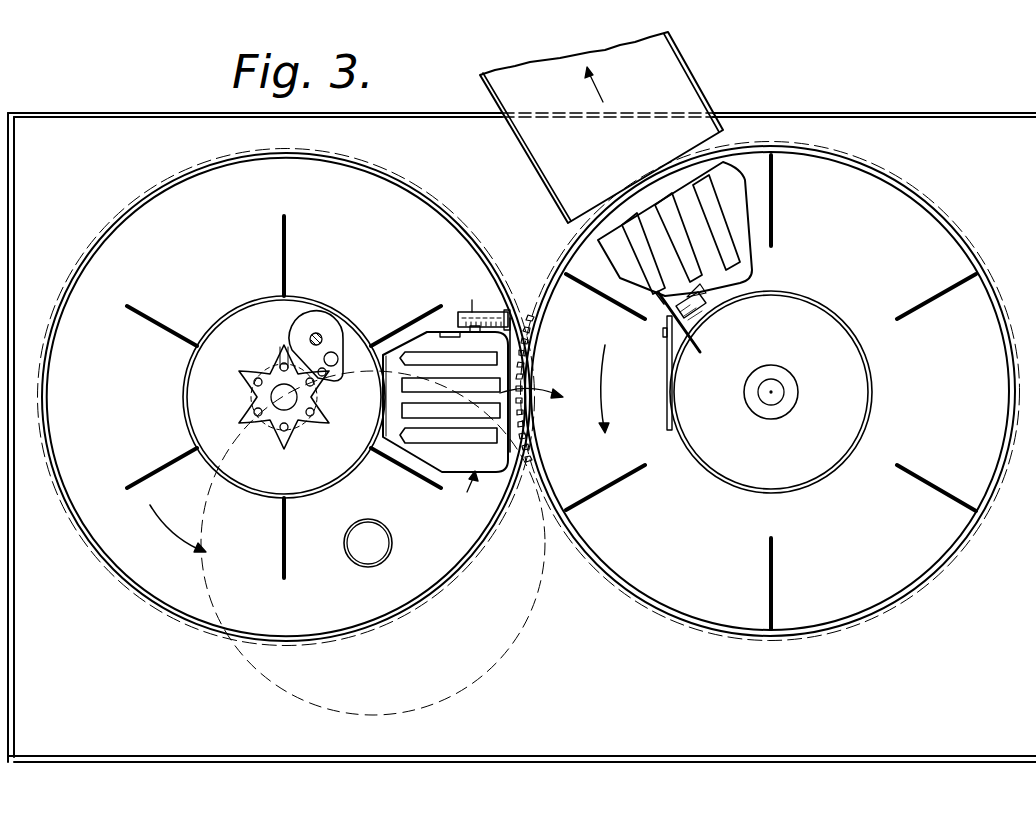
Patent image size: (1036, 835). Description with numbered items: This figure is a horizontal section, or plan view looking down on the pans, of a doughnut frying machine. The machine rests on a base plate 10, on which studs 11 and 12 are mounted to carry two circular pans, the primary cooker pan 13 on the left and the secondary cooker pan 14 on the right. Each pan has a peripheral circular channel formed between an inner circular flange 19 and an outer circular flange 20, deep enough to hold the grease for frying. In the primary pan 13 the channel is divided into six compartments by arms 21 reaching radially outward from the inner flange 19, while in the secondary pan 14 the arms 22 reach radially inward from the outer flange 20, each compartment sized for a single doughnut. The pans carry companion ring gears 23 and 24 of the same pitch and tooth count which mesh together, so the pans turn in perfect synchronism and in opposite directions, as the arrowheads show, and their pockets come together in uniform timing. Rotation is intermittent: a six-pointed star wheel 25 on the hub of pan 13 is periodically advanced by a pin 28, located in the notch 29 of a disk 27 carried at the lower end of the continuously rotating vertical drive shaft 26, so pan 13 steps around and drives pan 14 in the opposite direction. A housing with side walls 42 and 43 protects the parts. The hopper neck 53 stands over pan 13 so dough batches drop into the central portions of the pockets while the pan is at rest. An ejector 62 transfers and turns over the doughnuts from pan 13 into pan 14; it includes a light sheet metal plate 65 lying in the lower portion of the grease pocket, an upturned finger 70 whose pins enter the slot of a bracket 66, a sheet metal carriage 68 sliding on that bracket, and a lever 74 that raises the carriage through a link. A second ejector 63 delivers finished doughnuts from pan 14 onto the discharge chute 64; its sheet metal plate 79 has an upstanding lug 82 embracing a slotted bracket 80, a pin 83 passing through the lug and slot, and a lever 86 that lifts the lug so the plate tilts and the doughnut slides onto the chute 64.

The plate 10 is at (843, 684).
The stud 11 is at (373, 543).
The stud 12 is at (787, 393).
The pan 13 is at (140, 590).
The pan 14 is at (714, 638).
The inner circular flange 19 is at (184, 390).
The outer circular flange 20 is at (50, 460).
The arms 21 is at (287, 249).
The arms 22 is at (928, 315).
The ring gear 23 is at (522, 492).
The ring gear 24 is at (544, 514).
The star wheel 25 is at (246, 397).
The vertical drive shaft 26 is at (318, 333).
The disk 27 is at (346, 332).
The pin 28 is at (328, 375).
The notch 29 is at (339, 362).
The side wall 42 is at (262, 760).
The side wall 43 is at (417, 112).
The neck 53 is at (362, 566).
The ejector 62 is at (445, 423).
The ejector 63 is at (757, 229).
The chute 64 is at (696, 77).
The sheet metal plate 65 is at (437, 453).
The bracket 66 is at (486, 330).
The sheet metal carriage 68 is at (480, 312).
The upturned finger 70 is at (470, 311).
The lever 74 is at (528, 364).
The sheet metal plate 79 is at (737, 200).
The bracket 80 is at (703, 353).
The upstanding lug 82 is at (632, 335).
The pin 83 is at (700, 268).
The lever 86 is at (666, 415).